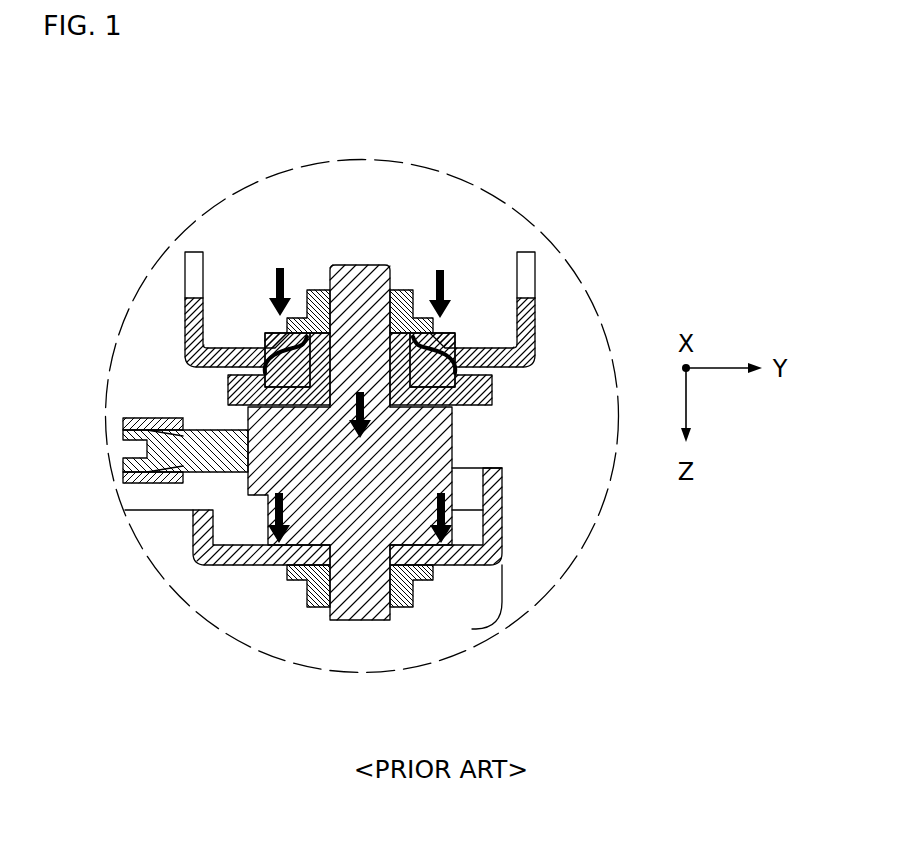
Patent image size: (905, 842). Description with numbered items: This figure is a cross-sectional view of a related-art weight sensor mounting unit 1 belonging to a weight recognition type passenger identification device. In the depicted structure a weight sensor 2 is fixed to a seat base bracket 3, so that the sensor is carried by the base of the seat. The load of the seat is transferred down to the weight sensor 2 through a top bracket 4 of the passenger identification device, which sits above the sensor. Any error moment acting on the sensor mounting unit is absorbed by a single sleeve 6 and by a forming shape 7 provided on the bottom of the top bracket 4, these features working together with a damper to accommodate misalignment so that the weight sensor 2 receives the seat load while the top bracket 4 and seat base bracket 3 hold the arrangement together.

The weight sensor mounting unit 1 is at (148, 109).
The weight sensor 2 is at (430, 445).
The seat base bracket 3 is at (500, 532).
The top bracket 4 is at (535, 307).
The sleeve 6 is at (230, 381).
The forming shape 7 is at (273, 358).